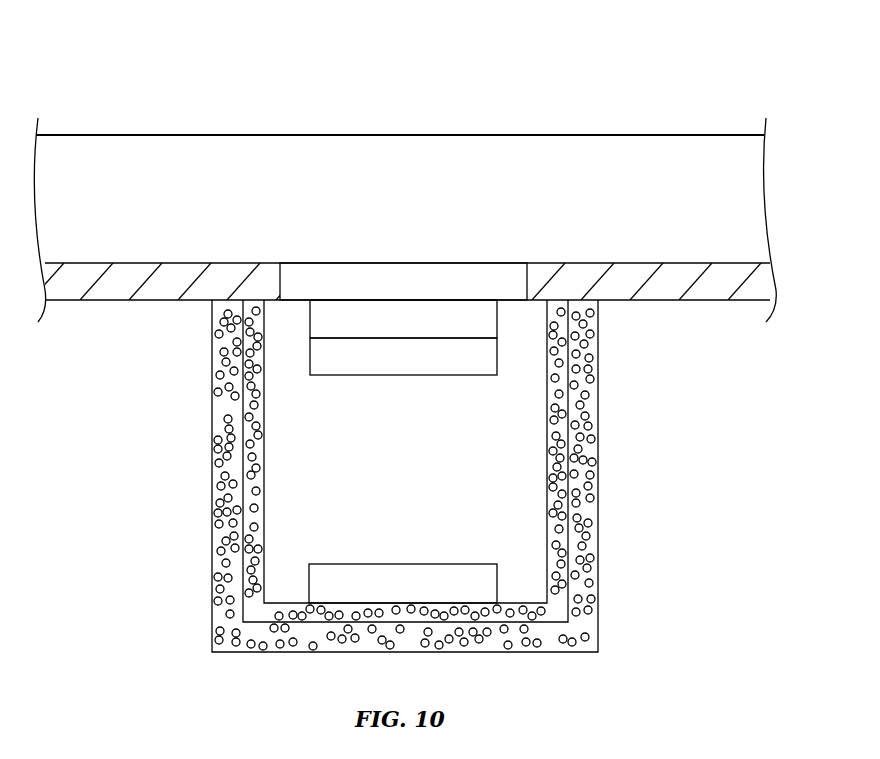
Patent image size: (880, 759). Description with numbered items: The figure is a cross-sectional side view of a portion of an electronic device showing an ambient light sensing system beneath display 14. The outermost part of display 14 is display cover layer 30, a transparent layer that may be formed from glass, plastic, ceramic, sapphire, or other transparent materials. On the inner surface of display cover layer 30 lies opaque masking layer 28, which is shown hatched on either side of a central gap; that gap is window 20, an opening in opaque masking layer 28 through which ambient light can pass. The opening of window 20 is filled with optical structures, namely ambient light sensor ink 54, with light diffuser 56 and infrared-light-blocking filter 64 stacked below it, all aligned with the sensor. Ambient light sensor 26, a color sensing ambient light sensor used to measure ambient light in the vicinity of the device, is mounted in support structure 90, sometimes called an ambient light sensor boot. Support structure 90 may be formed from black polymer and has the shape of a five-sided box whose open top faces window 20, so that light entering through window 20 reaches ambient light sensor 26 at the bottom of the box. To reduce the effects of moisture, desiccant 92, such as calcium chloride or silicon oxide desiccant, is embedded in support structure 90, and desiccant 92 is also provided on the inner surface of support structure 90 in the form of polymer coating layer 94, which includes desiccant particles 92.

The display 14 is at (738, 76).
The display cover layer 30 is at (147, 146).
The opaque masking layer 28 is at (116, 291).
The window 20 is at (525, 252).
The ambient light sensor ink 54 is at (293, 272).
The light diffuser 56 is at (318, 321).
The infrared-light-blocking filter 64 is at (318, 358).
The ambient light sensor 26 is at (348, 578).
The support structure 90 is at (599, 532).
The desiccant 92 is at (553, 495).
The polymer coating layer 94 is at (552, 538).